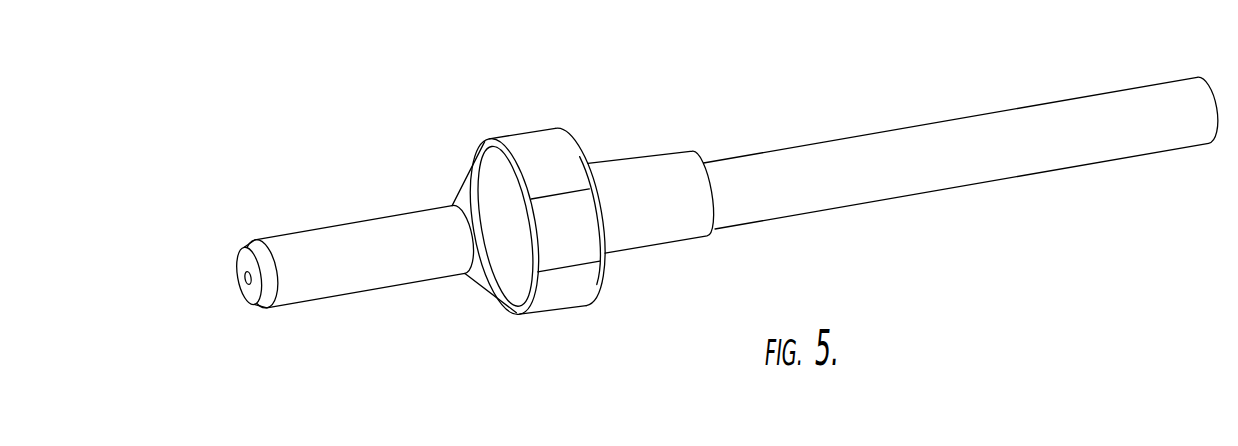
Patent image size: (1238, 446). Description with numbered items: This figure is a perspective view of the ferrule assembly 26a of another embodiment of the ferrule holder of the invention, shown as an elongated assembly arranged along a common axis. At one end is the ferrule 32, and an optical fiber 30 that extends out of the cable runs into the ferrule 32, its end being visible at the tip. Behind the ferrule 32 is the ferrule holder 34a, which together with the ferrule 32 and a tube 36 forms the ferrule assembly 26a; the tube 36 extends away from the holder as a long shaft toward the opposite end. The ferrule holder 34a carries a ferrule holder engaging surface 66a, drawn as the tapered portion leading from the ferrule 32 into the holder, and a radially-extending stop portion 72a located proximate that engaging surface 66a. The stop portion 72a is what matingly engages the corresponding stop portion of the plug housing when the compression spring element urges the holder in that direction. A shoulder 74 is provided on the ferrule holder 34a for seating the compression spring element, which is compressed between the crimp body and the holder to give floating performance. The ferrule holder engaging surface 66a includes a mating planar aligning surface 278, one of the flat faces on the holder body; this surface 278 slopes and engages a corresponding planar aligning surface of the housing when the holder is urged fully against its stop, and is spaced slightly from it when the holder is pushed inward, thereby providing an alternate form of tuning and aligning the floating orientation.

The optical fiber 30 is at (243, 278).
The ferrule 32 is at (302, 231).
The ferrule holder engaging surface 66a is at (482, 184).
The ferrule holder 34a is at (658, 191).
The shoulder 74 is at (587, 165).
The stop portion 72a is at (673, 225).
The planar aligning surface 278 is at (570, 223).
The ferrule assembly 26a is at (708, 103).
The tube 36 is at (925, 122).